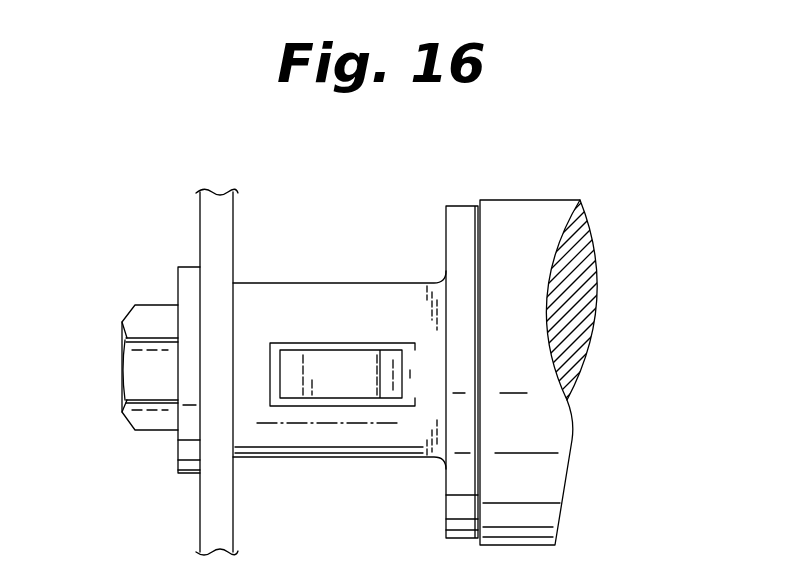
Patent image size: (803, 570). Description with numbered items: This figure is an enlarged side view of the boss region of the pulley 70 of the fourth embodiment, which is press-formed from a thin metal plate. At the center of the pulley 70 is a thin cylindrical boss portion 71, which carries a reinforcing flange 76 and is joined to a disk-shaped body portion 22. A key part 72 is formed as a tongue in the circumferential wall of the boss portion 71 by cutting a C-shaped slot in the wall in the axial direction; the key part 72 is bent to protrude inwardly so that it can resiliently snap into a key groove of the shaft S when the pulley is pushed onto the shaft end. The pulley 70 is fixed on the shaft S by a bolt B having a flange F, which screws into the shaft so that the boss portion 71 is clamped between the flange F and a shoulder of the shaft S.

The body portion 22 is at (208, 214).
The flange F is at (190, 296).
The bolt B is at (147, 375).
The pulley 70 is at (513, 333).
The boss portion 71 is at (378, 300).
The key part 72 is at (318, 358).
The reinforcing flange 76 is at (462, 215).
The shaft S is at (539, 186).